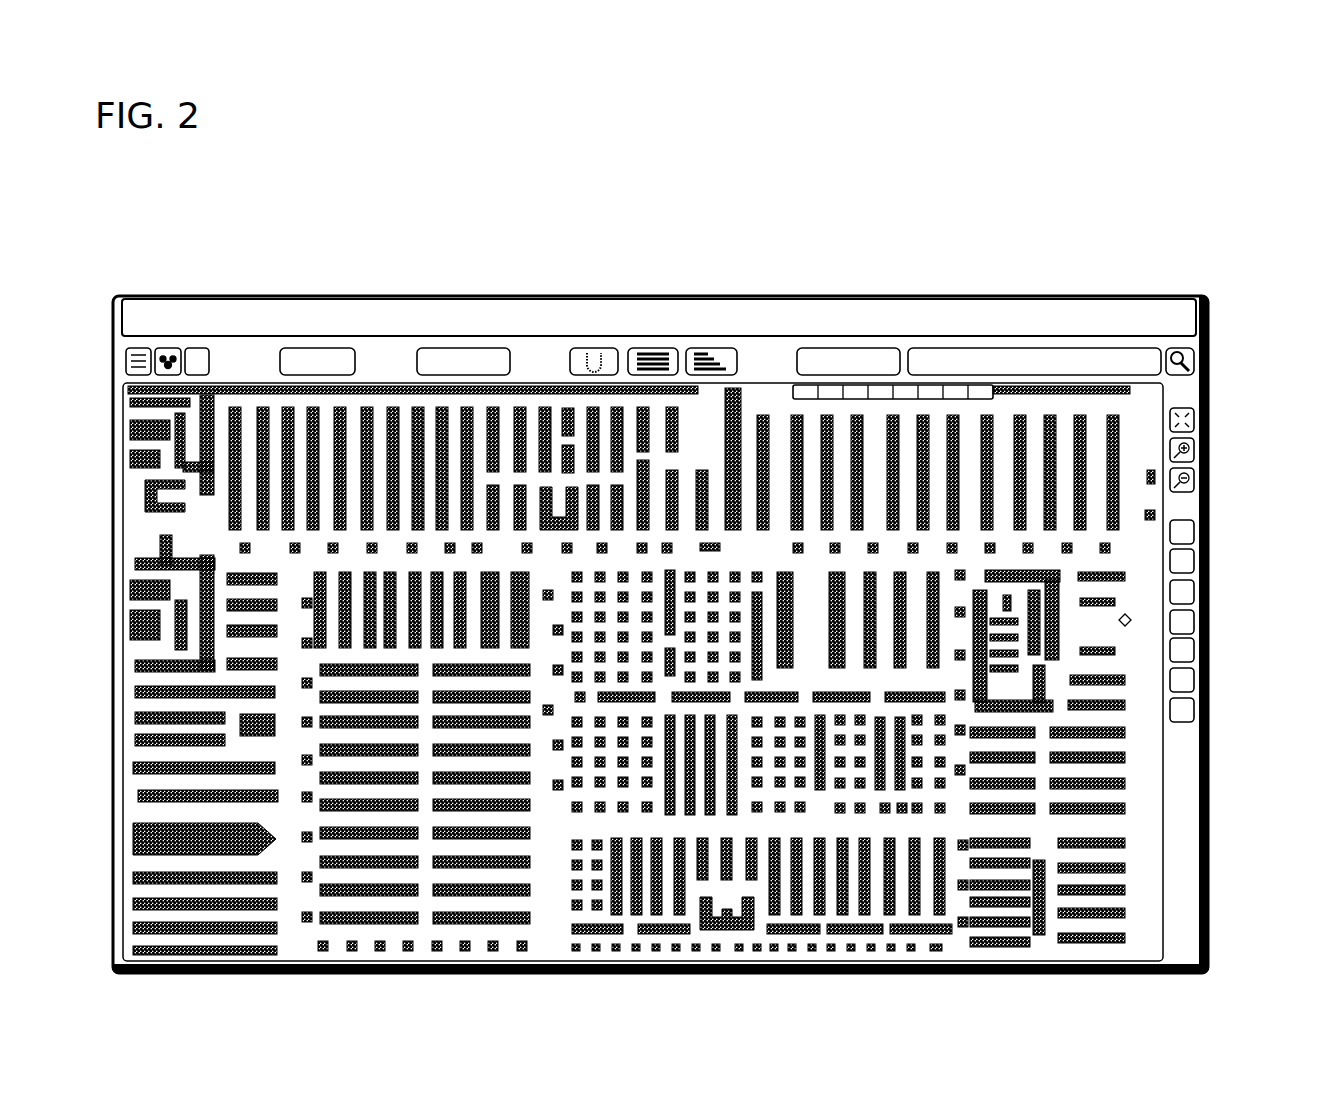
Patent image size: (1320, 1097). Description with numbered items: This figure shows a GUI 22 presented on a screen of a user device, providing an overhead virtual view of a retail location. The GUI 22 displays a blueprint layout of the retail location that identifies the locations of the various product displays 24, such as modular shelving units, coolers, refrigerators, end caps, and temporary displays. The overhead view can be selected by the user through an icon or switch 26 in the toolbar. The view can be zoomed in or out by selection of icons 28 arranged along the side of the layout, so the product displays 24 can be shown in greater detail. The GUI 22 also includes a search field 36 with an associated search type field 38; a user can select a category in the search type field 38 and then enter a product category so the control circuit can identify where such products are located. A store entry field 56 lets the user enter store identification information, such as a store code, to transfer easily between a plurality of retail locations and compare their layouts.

The GUI 22 is at (1233, 197).
The product displays 24 is at (276, 576).
The icon or switch 26 is at (620, 348).
The icons 28 is at (1208, 413).
The search field 36 is at (1030, 345).
The search type field 38 is at (870, 345).
The store entry field 56 is at (347, 348).